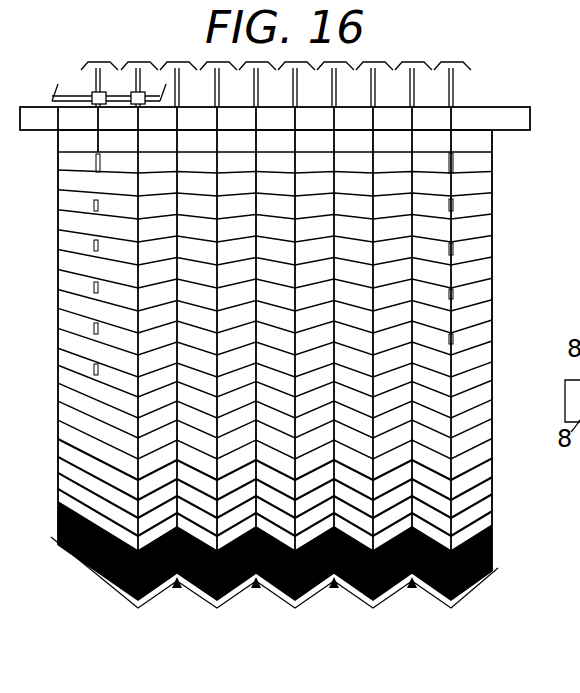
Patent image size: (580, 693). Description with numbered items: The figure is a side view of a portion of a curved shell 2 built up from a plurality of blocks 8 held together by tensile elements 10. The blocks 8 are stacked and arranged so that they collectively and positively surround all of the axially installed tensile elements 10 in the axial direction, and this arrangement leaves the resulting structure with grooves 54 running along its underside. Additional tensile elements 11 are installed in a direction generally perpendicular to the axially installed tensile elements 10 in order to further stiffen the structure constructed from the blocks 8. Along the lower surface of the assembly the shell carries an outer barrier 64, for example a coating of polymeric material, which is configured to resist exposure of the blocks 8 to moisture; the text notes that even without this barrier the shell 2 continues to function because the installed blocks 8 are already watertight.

The curved shell 2 is at (517, 507).
The block 8 is at (523, 115).
The tensile element 10 is at (94, 82).
The tensile element 11 is at (94, 93).
The groove 54 is at (177, 588).
The outer barrier 64 is at (477, 592).